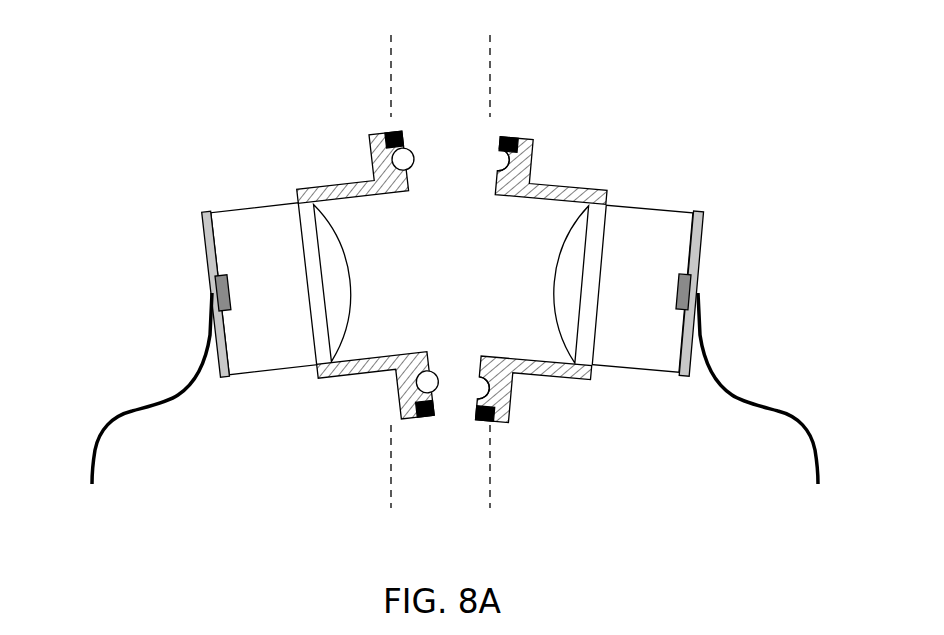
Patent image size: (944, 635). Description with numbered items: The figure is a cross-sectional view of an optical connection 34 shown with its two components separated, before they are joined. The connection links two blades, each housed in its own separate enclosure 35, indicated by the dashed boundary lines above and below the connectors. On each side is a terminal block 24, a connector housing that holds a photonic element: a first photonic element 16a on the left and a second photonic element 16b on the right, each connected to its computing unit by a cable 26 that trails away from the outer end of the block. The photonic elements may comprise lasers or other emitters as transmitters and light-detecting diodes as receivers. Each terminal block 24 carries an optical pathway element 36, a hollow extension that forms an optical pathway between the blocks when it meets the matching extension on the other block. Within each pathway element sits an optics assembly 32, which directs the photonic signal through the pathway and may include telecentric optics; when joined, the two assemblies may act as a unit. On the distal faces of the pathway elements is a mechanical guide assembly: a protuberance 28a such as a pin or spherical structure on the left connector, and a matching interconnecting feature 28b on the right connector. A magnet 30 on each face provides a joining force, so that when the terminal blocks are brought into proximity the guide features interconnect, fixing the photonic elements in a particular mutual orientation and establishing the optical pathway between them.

The optical connection 34 is at (231, 44).
The enclosure 35 is at (392, 63).
The magnet 30 is at (502, 137).
The optical pathway element 36 is at (350, 183).
The terminal block 24 is at (222, 213).
The protuberance 28a is at (411, 168).
The interconnecting feature 28b is at (506, 160).
The optics assembly 32 is at (343, 250).
The first photonic element 16a is at (220, 283).
The second photonic element 16b is at (681, 285).
The cable 26 is at (103, 435).